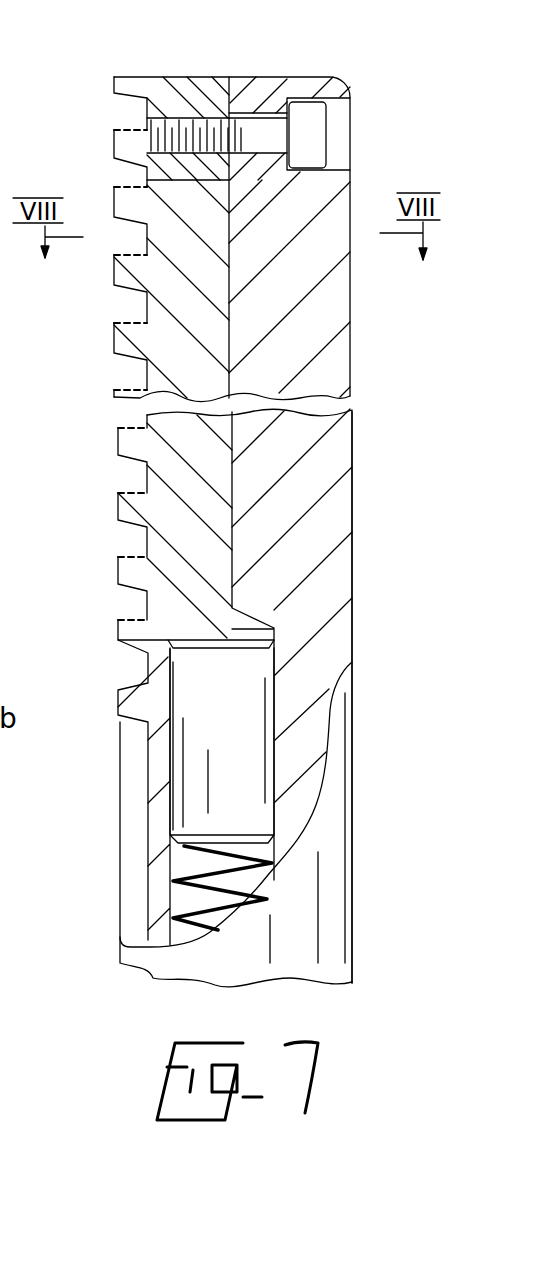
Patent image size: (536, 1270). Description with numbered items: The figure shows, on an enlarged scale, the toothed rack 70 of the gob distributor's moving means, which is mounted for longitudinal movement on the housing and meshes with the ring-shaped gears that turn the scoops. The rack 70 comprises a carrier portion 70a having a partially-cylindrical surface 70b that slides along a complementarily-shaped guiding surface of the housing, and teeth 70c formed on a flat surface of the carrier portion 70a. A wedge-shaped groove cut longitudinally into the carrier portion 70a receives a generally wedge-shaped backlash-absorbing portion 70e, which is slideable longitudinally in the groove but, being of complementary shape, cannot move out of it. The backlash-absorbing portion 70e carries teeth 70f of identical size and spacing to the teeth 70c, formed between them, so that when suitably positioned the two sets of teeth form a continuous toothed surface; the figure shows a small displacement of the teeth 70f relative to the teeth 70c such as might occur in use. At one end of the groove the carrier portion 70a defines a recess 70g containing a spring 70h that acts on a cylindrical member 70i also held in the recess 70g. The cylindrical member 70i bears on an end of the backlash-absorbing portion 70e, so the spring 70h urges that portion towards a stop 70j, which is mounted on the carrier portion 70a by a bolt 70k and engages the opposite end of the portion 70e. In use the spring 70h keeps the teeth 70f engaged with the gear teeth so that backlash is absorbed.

The toothed rack 70 is at (353, 448).
The carrier portion 70a is at (333, 511).
The partially-cylindrical surface 70b is at (353, 575).
The teeth 70c is at (137, 450).
The backlash-absorbing portion 70e is at (162, 457).
The teeth 70f is at (118, 341).
The recess 70g is at (264, 688).
The spring 70h is at (277, 862).
The cylindrical member 70i is at (253, 763).
The stop 70j is at (177, 83).
The bolt 70k is at (313, 132).